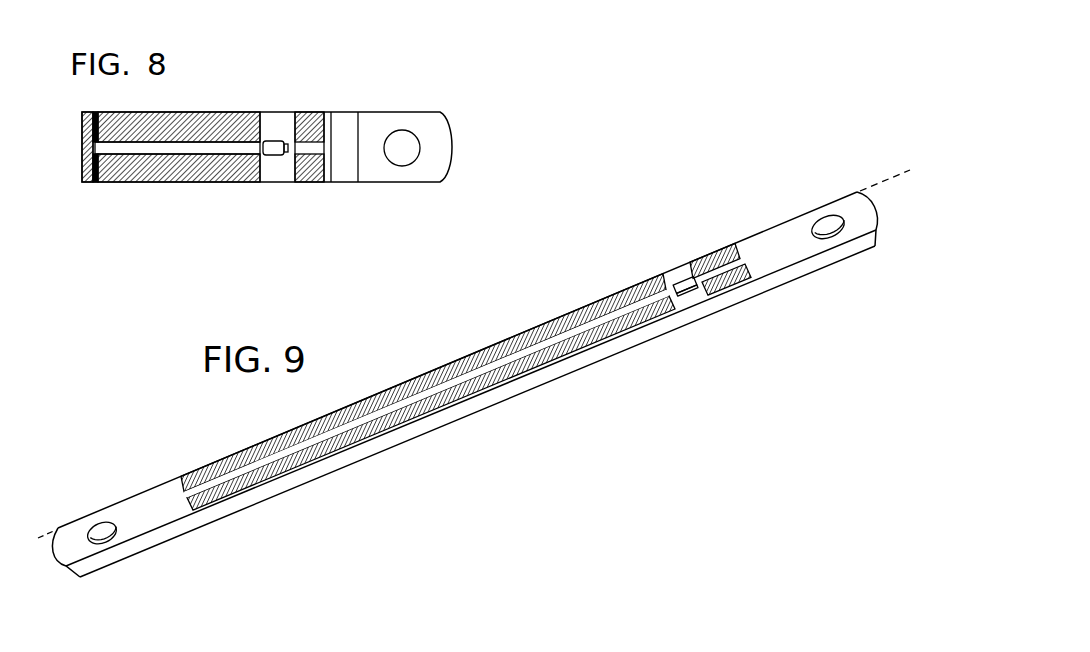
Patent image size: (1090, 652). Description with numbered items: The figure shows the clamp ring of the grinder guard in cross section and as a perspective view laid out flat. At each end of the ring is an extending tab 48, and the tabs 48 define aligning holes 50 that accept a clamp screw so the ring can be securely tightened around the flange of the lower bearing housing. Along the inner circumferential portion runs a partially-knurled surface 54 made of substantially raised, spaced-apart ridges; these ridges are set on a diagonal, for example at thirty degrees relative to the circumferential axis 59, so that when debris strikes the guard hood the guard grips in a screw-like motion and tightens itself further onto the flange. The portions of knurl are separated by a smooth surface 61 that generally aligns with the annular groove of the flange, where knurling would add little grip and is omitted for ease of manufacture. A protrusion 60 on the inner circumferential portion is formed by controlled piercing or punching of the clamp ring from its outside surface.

In FIG. 8, the extending tab 48 is at (412, 186).
In FIG. 8, the aligning hole 50 is at (397, 147).
In FIG. 9, the aligning hole 50 is at (105, 533).
In FIG. 8, the partially-knurled surface 54 is at (201, 126).
In FIG. 9, the partially-knurled surface 54 is at (457, 402).
In FIG. 9, the circumferential axis 59 is at (470, 341).
In FIG. 9, the protrusion 60 is at (683, 283).
In FIG. 8, the smooth surface 61 is at (143, 145).
In FIG. 9, the smooth surface 61 is at (574, 334).